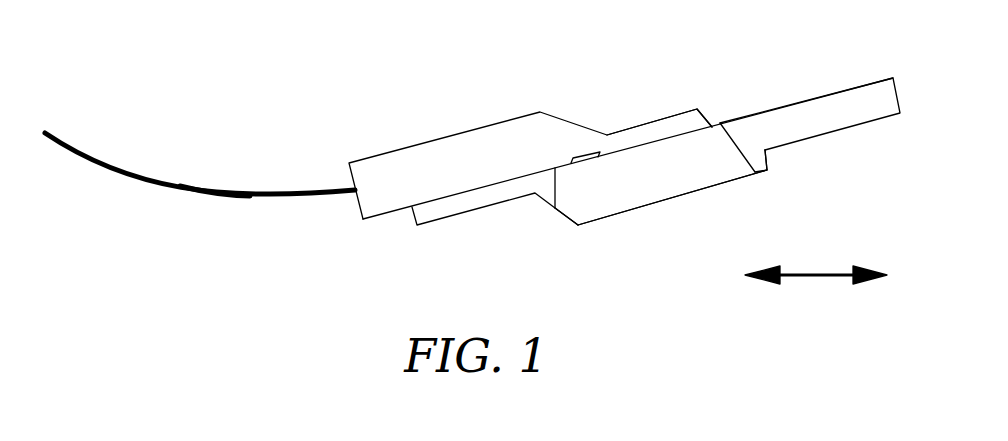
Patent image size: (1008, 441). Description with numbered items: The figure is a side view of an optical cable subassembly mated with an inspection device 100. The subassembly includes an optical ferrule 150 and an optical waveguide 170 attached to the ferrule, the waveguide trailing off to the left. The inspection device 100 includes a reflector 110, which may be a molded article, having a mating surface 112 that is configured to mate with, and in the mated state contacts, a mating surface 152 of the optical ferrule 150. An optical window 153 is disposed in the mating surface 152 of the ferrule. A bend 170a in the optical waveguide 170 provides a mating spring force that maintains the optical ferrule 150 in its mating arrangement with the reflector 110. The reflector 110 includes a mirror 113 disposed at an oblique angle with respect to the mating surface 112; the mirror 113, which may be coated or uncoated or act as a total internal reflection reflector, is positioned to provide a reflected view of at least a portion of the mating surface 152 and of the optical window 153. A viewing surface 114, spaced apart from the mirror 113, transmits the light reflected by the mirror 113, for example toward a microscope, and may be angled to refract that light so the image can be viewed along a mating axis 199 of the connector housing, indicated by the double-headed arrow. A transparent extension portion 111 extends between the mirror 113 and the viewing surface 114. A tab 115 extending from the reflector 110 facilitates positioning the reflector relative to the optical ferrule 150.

The inspection device 100 is at (287, 41).
The reflector 110 is at (663, 234).
The transparent extension portion 111 is at (730, 177).
The mating surface of the reflector 112 is at (643, 143).
The mirror 113 is at (560, 210).
The viewing surface 114 is at (772, 158).
The tab 115 is at (825, 102).
The optical ferrule 150 is at (485, 95).
The mating surface of the optical ferrule 152 is at (553, 208).
The optical window 153 is at (582, 157).
The optical waveguide 170 is at (85, 160).
The bend 170a is at (218, 190).
The mating axis 199 is at (817, 278).